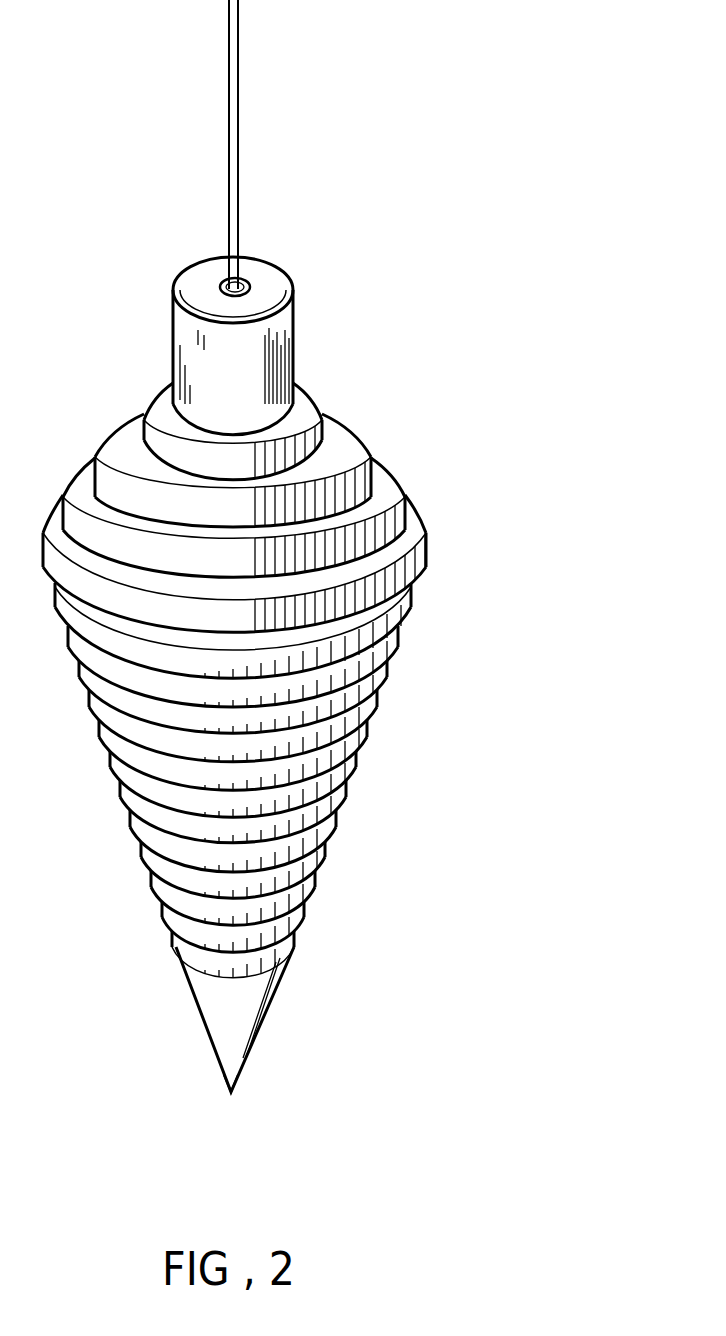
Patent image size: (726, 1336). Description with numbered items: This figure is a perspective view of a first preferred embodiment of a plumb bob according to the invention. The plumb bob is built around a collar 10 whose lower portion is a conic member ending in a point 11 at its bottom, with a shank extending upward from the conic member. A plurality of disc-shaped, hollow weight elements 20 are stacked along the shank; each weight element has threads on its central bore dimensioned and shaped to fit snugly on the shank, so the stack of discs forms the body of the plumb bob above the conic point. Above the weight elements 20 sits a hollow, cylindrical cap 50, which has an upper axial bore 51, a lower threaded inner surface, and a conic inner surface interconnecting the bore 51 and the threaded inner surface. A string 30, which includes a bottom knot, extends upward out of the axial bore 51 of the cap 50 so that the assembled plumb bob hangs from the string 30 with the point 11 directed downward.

The collar 10 is at (255, 997).
The point 11 is at (240, 1080).
The weight elements 20 is at (413, 513).
The string 30 is at (240, 110).
The cap 50 is at (277, 337).
The axial bore 51 is at (253, 279).